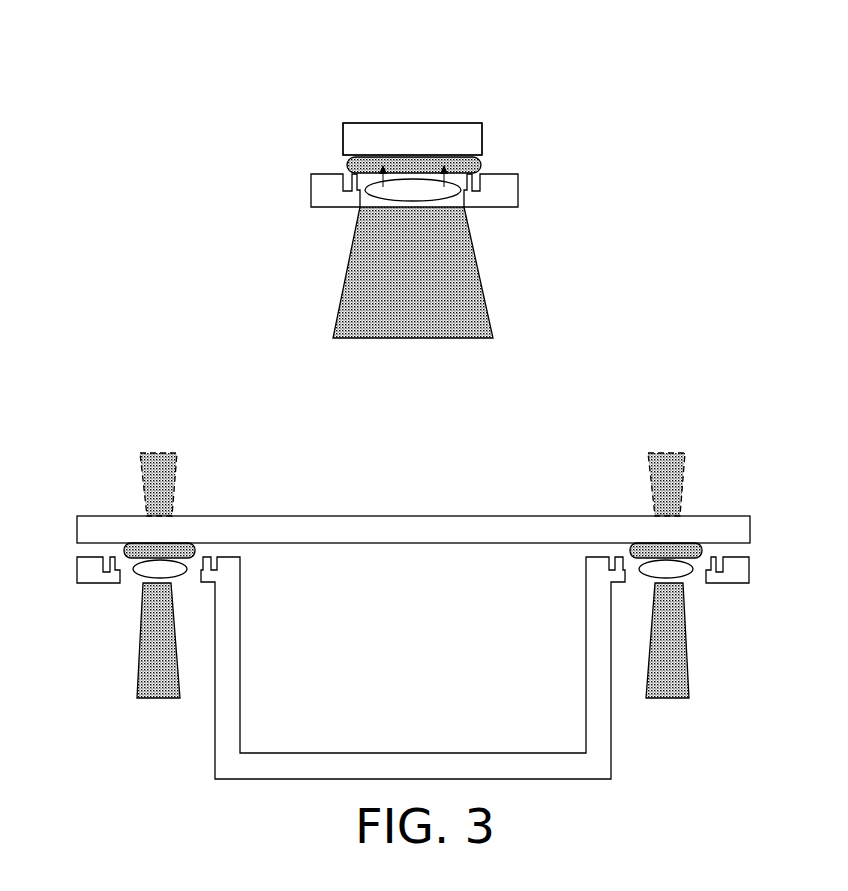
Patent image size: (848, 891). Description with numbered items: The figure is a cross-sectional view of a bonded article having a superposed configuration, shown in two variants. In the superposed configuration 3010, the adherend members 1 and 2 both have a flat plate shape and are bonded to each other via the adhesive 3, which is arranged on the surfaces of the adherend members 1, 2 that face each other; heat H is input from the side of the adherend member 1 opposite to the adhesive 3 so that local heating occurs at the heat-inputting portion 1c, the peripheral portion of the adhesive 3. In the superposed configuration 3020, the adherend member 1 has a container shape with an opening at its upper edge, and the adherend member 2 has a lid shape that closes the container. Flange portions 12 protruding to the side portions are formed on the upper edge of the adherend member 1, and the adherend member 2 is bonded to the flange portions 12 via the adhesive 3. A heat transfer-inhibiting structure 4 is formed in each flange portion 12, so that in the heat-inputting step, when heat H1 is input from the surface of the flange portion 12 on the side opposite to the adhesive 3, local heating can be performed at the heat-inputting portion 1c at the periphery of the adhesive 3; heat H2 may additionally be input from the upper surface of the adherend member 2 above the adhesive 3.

The superposed configuration 3010 is at (500, 44).
The superposed configuration 3020 is at (734, 440).
The adherend member 1 is at (507, 174).
The heat-inputting portion 1c is at (378, 195).
The adherend member 2 is at (437, 123).
The adhesive 3 is at (349, 164).
The heat transfer-inhibiting structure 4 is at (485, 170).
The flange portion 12 is at (749, 577).
The heat H is at (475, 283).
The heat H1 is at (142, 648).
The heat H2 is at (145, 485).